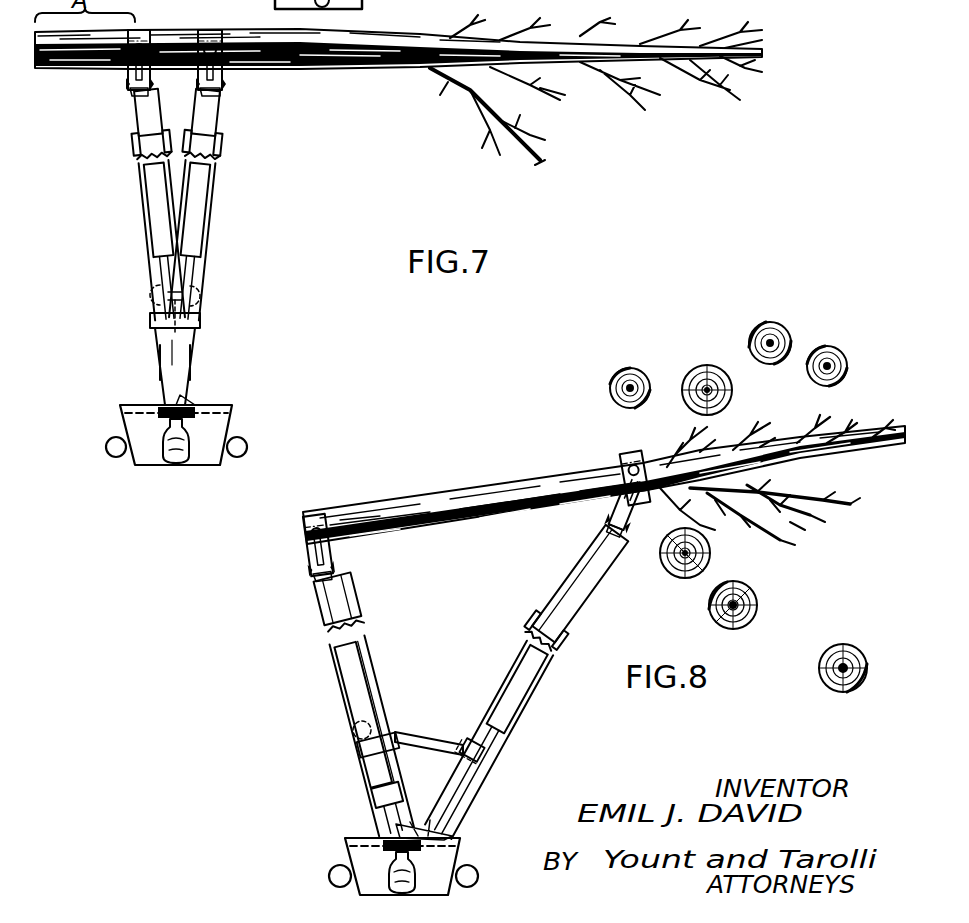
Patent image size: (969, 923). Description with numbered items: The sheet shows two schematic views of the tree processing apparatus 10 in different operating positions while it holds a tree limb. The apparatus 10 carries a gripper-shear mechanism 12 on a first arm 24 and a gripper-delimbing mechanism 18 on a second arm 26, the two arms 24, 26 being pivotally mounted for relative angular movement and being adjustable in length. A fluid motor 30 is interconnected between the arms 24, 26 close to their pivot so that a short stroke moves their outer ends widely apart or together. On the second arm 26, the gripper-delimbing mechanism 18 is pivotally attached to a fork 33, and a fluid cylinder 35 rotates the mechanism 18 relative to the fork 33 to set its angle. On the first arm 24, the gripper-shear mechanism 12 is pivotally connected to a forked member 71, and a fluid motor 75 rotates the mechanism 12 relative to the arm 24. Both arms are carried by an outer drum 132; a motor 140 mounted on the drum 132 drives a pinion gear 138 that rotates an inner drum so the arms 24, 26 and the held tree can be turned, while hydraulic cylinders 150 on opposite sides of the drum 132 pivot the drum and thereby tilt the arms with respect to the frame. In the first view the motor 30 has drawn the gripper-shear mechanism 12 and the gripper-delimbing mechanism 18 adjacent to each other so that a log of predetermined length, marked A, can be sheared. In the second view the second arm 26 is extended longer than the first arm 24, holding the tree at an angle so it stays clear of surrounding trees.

In FIG. 7, the tree processing apparatus 10 is at (342, 324).
In FIG. 8, the tree processing apparatus 10 is at (226, 796).
In FIG. 7, the gripper-shear mechanism 12 is at (398, 90).
In FIG. 8, the gripper-shear mechanism 12 is at (604, 483).
In FIG. 7, the gripper-delimbing mechanism 18 is at (235, 60).
In FIG. 8, the gripper-delimbing mechanism 18 is at (632, 460).
In FIG. 7, the first arm 24 is at (124, 154).
In FIG. 8, the first arm 24 is at (318, 626).
In FIG. 7, the second arm 26 is at (228, 141).
In FIG. 8, the second arm 26 is at (560, 628).
In FIG. 7, the fluid motor 30 is at (157, 316).
In FIG. 8, the fluid motor 30 is at (386, 730).
In FIG. 7, the fork 33 is at (198, 84).
In FIG. 8, the fork 33 is at (614, 520).
In FIG. 7, the fluid cylinder 35 is at (228, 86).
In FIG. 8, the fluid cylinder 35 is at (638, 546).
In FIG. 7, the forked member 71 is at (140, 92).
In FIG. 8, the forked member 71 is at (340, 567).
In FIG. 7, the fluid motor 75 is at (128, 88).
In FIG. 8, the fluid motor 75 is at (314, 580).
In FIG. 7, the outer drum 132 is at (236, 408).
In FIG. 8, the outer drum 132 is at (350, 846).
In FIG. 7, the pinion gear 138 is at (194, 406).
In FIG. 8, the pinion gear 138 is at (453, 828).
In FIG. 7, the motor 140 is at (172, 462).
In FIG. 8, the motor 140 is at (402, 880).
In FIG. 7, the hydraulic cylinders 150 is at (117, 439).
In FIG. 8, the hydraulic cylinders 150 is at (335, 872).